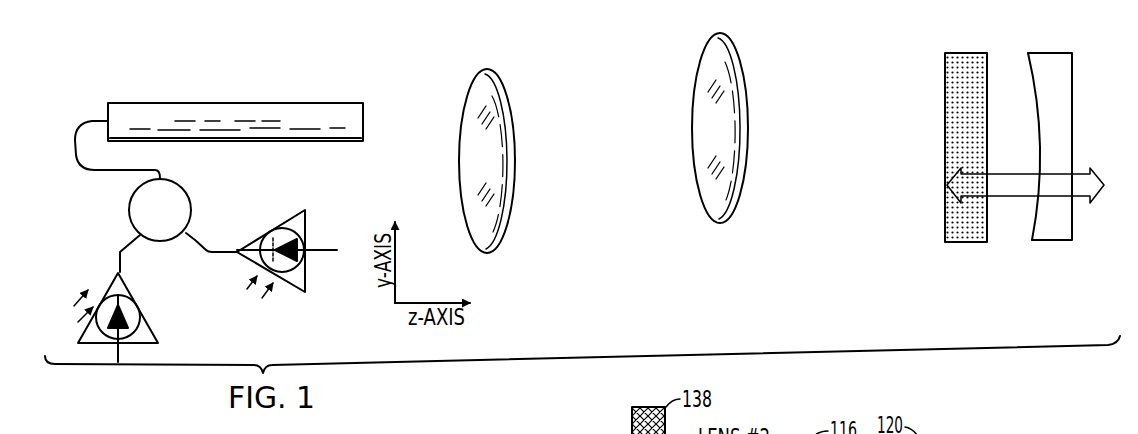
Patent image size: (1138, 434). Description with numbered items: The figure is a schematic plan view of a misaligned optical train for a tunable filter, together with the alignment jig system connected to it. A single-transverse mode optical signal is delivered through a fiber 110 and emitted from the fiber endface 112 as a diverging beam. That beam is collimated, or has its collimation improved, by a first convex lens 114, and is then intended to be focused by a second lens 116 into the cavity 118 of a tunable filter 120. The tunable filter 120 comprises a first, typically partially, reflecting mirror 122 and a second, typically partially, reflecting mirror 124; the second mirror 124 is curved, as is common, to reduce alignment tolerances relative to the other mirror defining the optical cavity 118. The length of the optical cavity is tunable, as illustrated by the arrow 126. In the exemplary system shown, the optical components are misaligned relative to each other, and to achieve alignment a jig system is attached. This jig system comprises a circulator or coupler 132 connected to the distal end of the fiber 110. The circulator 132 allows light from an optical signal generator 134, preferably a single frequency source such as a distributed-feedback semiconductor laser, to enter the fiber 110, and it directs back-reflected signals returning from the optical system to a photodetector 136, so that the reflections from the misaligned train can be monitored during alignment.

The fiber 110 is at (218, 103).
The fiber endface 112 is at (365, 122).
The first convex lens 114 is at (505, 89).
The second lens 116 is at (736, 54).
The cavity 118 is at (1007, 61).
The tunable filter 120 is at (1028, 151).
The first reflecting mirror 122 is at (964, 243).
The second reflecting mirror 124 is at (1075, 241).
The arrow 126 is at (1008, 198).
The circulator or coupler 132 is at (183, 187).
The optical signal generator 134 is at (147, 325).
The photodetector 136 is at (293, 292).